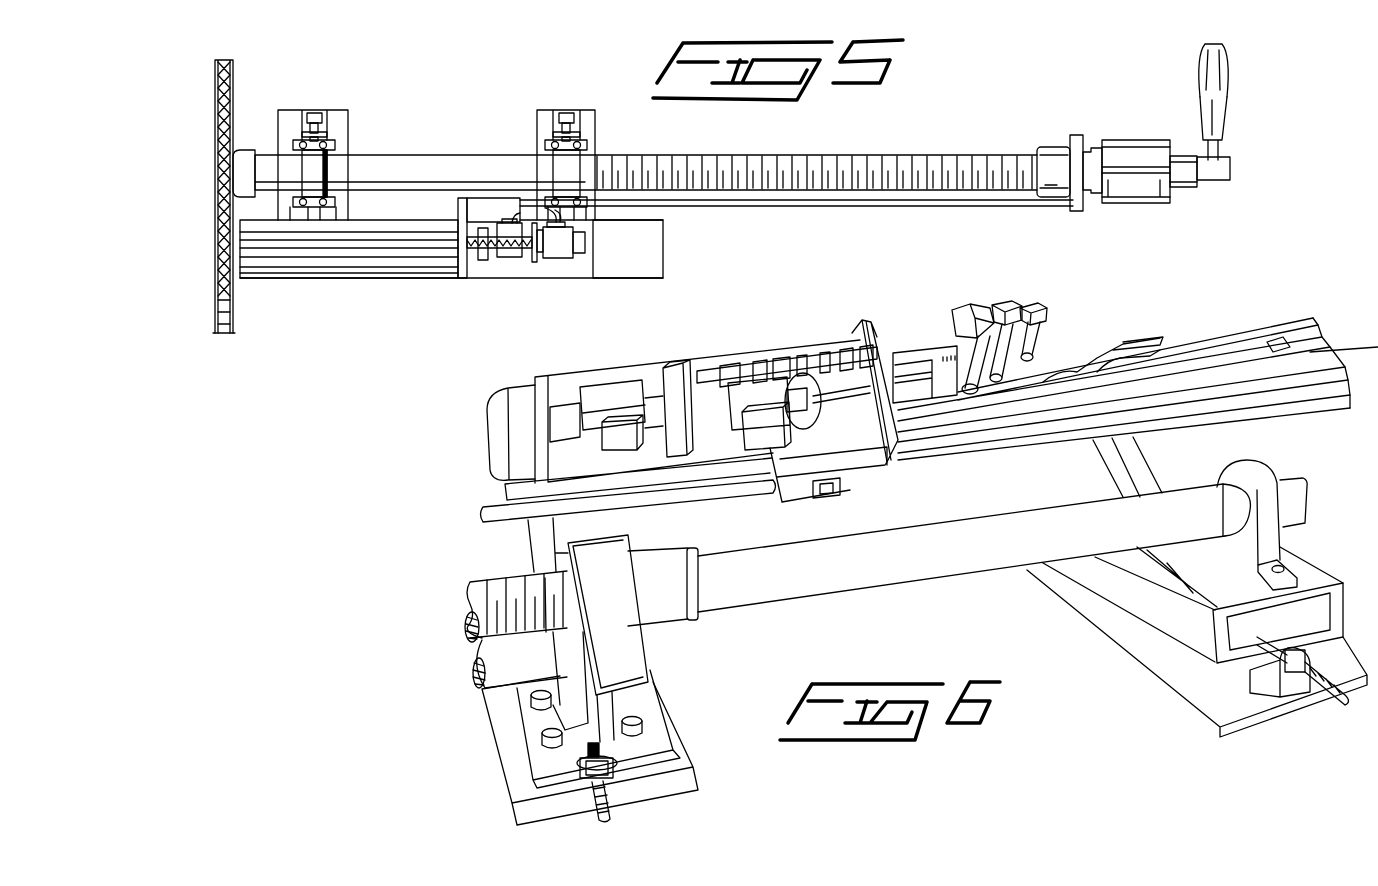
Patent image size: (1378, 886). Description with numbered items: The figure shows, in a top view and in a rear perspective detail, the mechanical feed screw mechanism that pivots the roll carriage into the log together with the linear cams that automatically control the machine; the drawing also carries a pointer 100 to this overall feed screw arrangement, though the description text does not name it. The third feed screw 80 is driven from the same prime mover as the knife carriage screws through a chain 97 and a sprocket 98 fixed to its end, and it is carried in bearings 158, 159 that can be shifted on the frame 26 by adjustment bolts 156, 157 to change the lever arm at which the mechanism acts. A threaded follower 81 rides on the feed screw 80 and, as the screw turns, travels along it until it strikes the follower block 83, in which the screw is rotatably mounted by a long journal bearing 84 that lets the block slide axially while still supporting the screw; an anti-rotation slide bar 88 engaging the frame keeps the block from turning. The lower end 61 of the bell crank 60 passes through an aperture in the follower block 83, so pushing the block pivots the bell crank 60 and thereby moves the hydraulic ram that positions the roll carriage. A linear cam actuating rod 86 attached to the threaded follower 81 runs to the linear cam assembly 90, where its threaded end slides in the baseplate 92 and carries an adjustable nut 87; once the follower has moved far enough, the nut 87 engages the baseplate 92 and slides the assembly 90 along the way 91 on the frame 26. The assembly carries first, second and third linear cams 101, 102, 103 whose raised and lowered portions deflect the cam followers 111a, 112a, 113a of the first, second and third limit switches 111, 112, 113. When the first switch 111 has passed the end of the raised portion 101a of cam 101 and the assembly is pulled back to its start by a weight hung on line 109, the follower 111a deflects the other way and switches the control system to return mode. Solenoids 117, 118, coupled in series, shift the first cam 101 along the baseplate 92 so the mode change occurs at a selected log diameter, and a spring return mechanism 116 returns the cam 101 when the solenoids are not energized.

In FIG. 6, the frame 26 is at (693, 777).
In FIG. 5, the bell crank 60 is at (1228, 61).
In FIG. 5, the lower end of the bell crank 61 is at (1225, 106).
In FIG. 5, the third feed screw 80 is at (925, 157).
In FIG. 6, the third feed screw 80 is at (477, 578).
In FIG. 5, the threaded follower 81 is at (1078, 135).
In FIG. 5, the follower block 83 is at (1160, 141).
In FIG. 5, the journal bearing 84 is at (1099, 139).
In FIG. 5, the linear cam actuating rod 86 is at (860, 207).
In FIG. 6, the linear cam actuating rod 86 is at (482, 514).
In FIG. 6, the nut 87 is at (830, 498).
In FIG. 5, the anti-rotation slide bar 88 is at (1130, 178).
In FIG. 5, the linear cam assembly 90 is at (461, 286).
In FIG. 6, the linear cam assembly 90 is at (820, 339).
In FIG. 5, the way 91 is at (663, 262).
In FIG. 6, the way 91 is at (508, 421).
In FIG. 5, the linear cam assembly baseplate 92 is at (597, 278).
In FIG. 6, the linear cam assembly baseplate 92 is at (545, 380).
In FIG. 5, the chain 97 is at (234, 332).
In FIG. 5, the sprocket 98 is at (233, 100).
In FIG. 5, the support beam 100 is at (357, 293).
In FIG. 6, the first linear cam 101 is at (1077, 370).
In FIG. 6, the raised portion of first cam 101a is at (1100, 372).
In FIG. 6, the second linear cam 102 is at (1210, 352).
In FIG. 6, the third linear cam 103 is at (1153, 340).
In FIG. 6, the line 109 is at (1357, 347).
In FIG. 6, the first limit switch 111 is at (978, 290).
In FIG. 6, the cam follower 111a is at (975, 394).
In FIG. 6, the second limit switch 112 is at (1022, 278).
In FIG. 6, the cam follower 112a is at (1015, 380).
In FIG. 6, the third limit switch 113 is at (1072, 285).
In FIG. 6, the cam follower 113a is at (1040, 342).
In FIG. 6, the spring return mechanism 116 is at (907, 355).
In FIG. 5, the solenoid 117 is at (570, 262).
In FIG. 6, the solenoid 117 is at (612, 390).
In FIG. 5, the solenoid 118 is at (515, 258).
In FIG. 6, the solenoid 118 is at (740, 383).
In FIG. 6, the adjustment bolt 156 is at (612, 815).
In FIG. 6, the adjustment bolt 157 is at (1340, 706).
In FIG. 5, the bearing 158 is at (560, 155).
In FIG. 6, the bearing 158 is at (642, 653).
In FIG. 5, the bearing 159 is at (322, 157).
In FIG. 6, the bearing 159 is at (1280, 540).